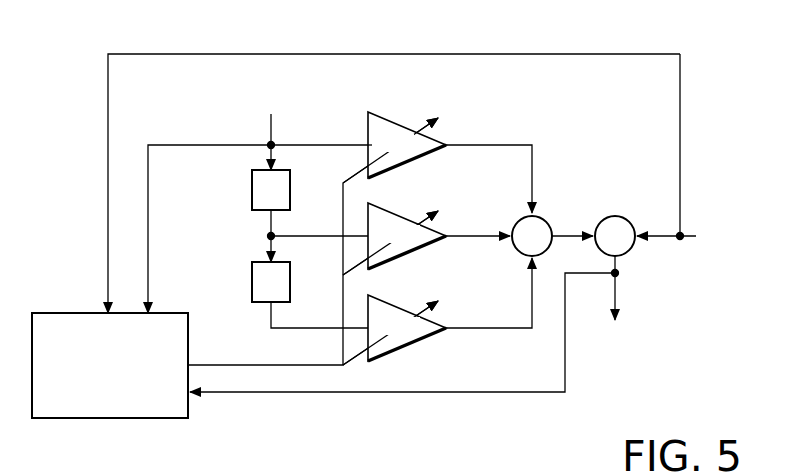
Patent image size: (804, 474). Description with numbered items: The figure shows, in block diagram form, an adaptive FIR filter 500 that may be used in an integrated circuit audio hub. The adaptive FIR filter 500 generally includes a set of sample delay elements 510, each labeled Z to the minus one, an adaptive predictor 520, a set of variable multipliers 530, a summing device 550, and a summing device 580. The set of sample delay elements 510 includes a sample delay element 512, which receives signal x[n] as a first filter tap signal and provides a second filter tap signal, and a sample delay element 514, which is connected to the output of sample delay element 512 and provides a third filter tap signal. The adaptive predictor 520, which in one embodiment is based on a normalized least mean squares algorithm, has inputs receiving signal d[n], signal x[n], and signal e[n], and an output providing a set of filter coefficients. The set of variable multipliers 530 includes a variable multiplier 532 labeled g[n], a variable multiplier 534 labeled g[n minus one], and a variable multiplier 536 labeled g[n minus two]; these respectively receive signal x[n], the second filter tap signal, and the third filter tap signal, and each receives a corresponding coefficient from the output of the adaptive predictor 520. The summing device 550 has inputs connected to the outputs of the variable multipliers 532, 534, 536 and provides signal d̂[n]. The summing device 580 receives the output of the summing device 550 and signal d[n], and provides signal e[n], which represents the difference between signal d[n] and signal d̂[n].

The adaptive FIR filter 500 is at (665, 418).
The set of sample delay elements 510 is at (266, 92).
The sample delay element 512 is at (252, 190).
The sample delay element 514 is at (252, 282).
The adaptive predictor 520 is at (58, 313).
The set of variable multipliers 530 is at (398, 101).
The variable multiplier 532 is at (412, 166).
The variable multiplier 534 is at (412, 257).
The variable multiplier 536 is at (412, 347).
The summing device 550 is at (517, 221).
The summing device 580 is at (604, 216).